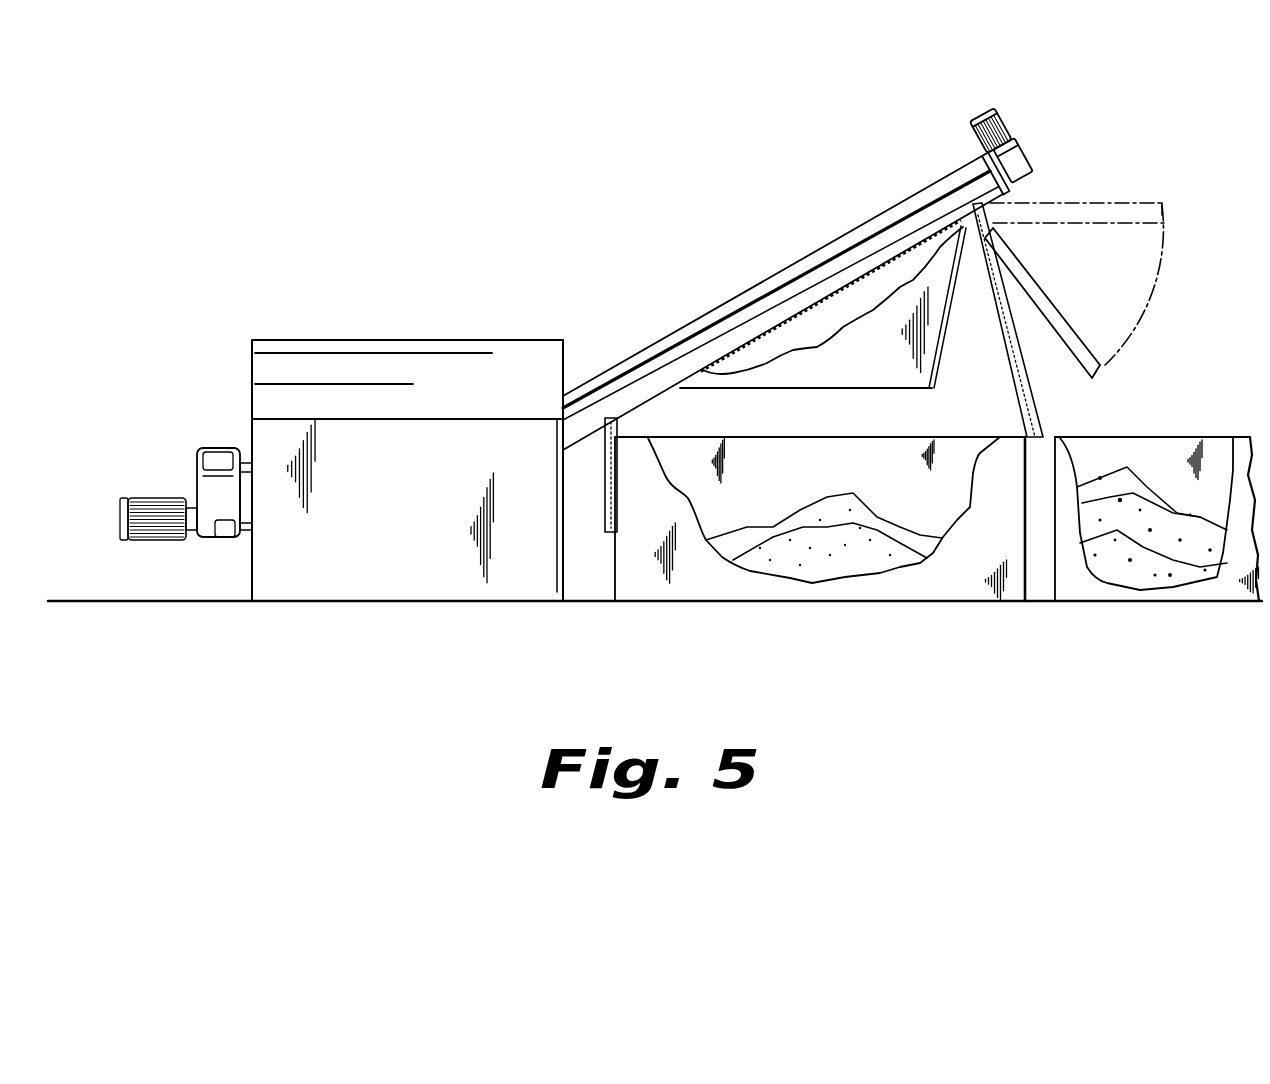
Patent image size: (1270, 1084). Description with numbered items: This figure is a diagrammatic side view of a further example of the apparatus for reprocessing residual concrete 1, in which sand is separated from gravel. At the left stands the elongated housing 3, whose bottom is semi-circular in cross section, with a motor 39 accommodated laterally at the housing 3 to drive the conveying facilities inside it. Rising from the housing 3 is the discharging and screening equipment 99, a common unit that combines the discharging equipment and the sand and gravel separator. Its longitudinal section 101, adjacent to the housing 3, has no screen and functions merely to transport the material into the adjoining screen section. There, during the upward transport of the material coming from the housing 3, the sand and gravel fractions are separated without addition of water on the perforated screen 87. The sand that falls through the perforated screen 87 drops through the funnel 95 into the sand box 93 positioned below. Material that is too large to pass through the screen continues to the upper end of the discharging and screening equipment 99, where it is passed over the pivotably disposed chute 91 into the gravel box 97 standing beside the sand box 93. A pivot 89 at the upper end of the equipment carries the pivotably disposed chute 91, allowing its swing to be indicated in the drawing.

The apparatus for reprocessing residual concrete 1 is at (265, 317).
The housing 3 is at (347, 362).
The motor 39 is at (137, 497).
The longitudinal section 101 is at (573, 328).
The discharging and screening equipment 99 is at (755, 270).
The perforated screen 87 is at (838, 301).
The pivot 89 is at (990, 224).
The pivotably disposed chute 91 is at (1100, 372).
The sand box 93 is at (950, 577).
The funnel 95 is at (913, 363).
The gravel box 97 is at (1218, 588).